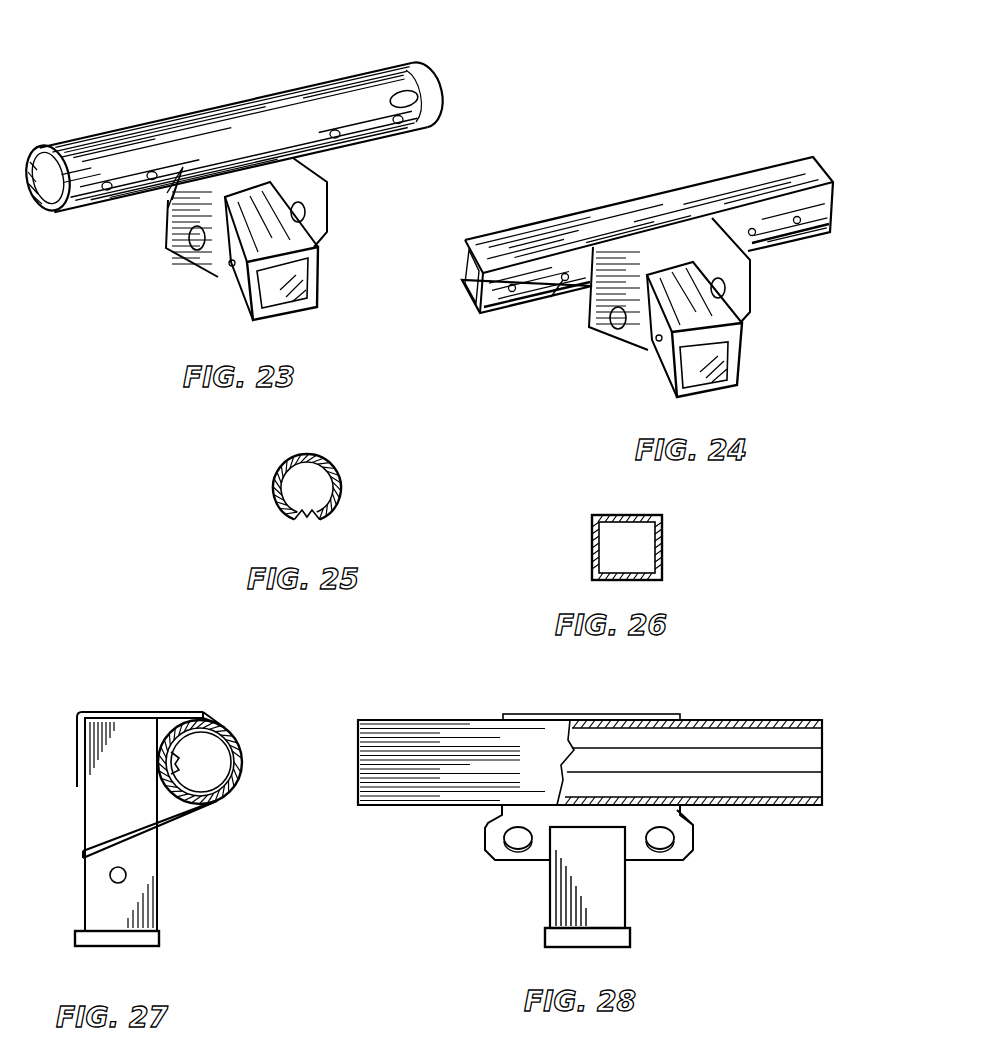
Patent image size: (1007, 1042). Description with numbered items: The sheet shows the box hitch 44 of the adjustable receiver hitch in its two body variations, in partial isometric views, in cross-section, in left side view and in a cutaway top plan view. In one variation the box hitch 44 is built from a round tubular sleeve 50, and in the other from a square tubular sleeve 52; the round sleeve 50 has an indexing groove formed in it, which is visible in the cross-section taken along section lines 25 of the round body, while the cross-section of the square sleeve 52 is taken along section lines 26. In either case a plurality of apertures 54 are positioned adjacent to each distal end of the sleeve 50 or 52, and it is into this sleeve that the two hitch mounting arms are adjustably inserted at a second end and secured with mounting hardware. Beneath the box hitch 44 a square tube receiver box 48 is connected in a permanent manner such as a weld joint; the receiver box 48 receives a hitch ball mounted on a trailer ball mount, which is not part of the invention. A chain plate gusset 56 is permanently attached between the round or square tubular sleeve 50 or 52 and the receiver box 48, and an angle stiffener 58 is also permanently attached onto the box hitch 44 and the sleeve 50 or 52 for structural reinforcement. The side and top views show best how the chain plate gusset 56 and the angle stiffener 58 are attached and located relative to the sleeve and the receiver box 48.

In FIG. 23, the box hitch 44 is at (158, 102).
In FIG. 24, the box hitch 44 is at (634, 186).
In FIG. 27, the box hitch 44 is at (88, 700).
In FIG. 28, the box hitch 44 is at (711, 714).
In FIG. 23, the receiver box 48 is at (317, 293).
In FIG. 24, the receiver box 48 is at (740, 346).
In FIG. 27, the receiver box 48 is at (155, 921).
In FIG. 28, the receiver box 48 is at (627, 912).
In FIG. 23, the round tubular sleeve 50 is at (85, 212).
In FIG. 25, the round tubular sleeve 50 is at (293, 530).
In FIG. 27, the round tubular sleeve 50 is at (222, 730).
In FIG. 28, the round tubular sleeve 50 is at (410, 720).
In FIG. 24, the square tubular sleeve 52 is at (480, 316).
In FIG. 26, the square tubular sleeve 52 is at (663, 553).
In FIG. 23, the apertures 54 is at (430, 94).
In FIG. 24, the apertures 54 is at (562, 290).
In FIG. 28, the apertures 54 is at (776, 721).
In FIG. 23, the chain plate gusset 56 is at (192, 276).
In FIG. 24, the chain plate gusset 56 is at (607, 355).
In FIG. 27, the chain plate gusset 56 is at (178, 825).
In FIG. 28, the chain plate gusset 56 is at (501, 860).
In FIG. 27, the angle stiffener 58 is at (165, 709).
In FIG. 28, the angle stiffener 58 is at (569, 714).
In FIG. 23, the section lines 25— 25 is at (378, 184).
In FIG. 24, the section lines 26— 26 is at (791, 296).